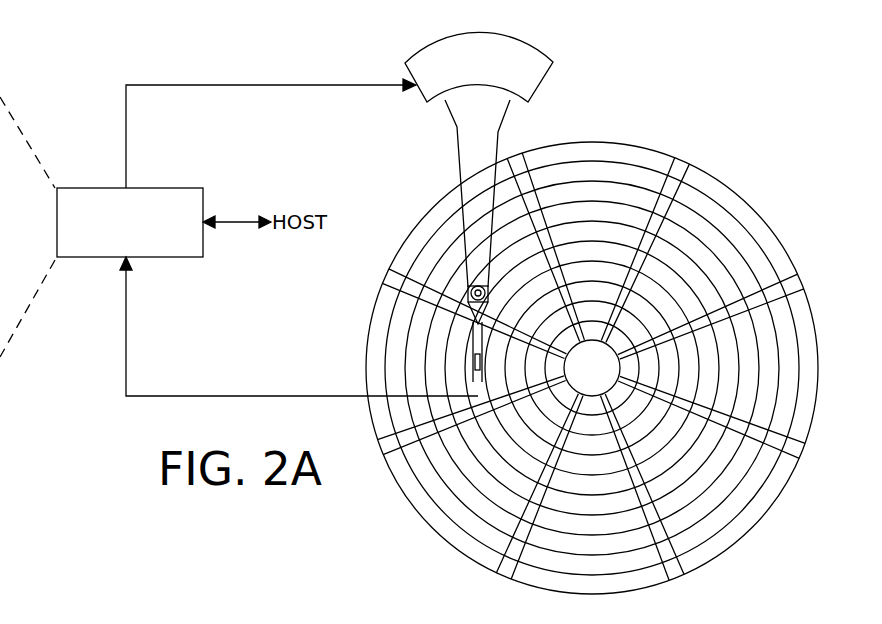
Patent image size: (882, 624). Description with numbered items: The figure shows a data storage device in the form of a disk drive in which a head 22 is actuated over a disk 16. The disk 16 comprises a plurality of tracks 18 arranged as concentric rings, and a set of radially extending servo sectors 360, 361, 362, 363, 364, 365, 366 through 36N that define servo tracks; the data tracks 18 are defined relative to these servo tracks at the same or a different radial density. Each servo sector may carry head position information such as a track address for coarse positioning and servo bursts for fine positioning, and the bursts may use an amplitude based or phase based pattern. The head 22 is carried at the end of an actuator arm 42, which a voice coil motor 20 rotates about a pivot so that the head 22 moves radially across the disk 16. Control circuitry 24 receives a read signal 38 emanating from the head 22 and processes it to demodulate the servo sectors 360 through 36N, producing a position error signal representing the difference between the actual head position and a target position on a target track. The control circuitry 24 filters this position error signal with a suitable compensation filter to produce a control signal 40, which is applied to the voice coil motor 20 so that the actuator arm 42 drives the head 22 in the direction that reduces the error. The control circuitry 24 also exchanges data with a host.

The disk 16 is at (748, 194).
The tracks 18 is at (577, 172).
The voice coil motor (VCM) 20 is at (414, 90).
The head 22 is at (478, 362).
The control circuitry 24 is at (168, 188).
The servo sector 36N is at (516, 163).
The servo sector 360 is at (680, 165).
The servo sector 361 is at (794, 284).
The servo sector 362 is at (794, 453).
The servo sector 363 is at (673, 568).
The servo sector 364 is at (508, 567).
The servo sector 365 is at (390, 452).
The servo sector 366 is at (395, 277).
The read signal 38 is at (286, 396).
The control signal 40 is at (126, 122).
The actuator arm 42 is at (458, 150).